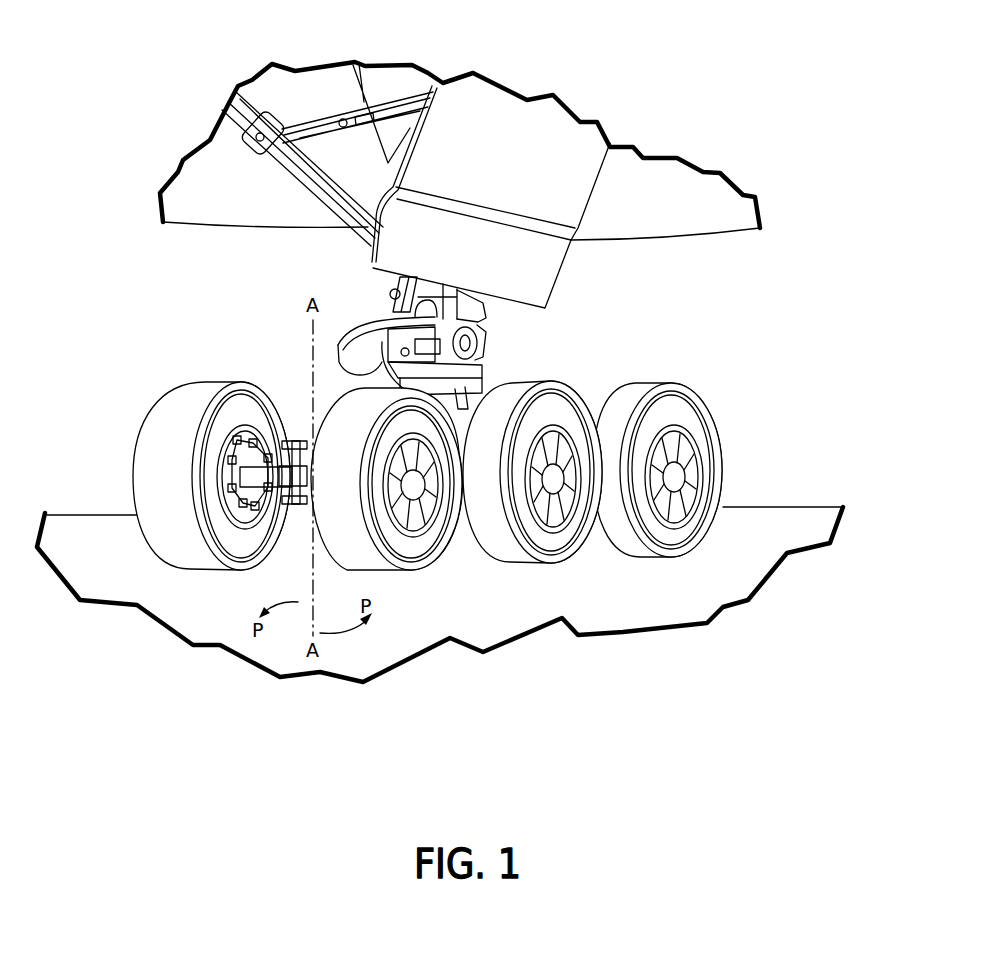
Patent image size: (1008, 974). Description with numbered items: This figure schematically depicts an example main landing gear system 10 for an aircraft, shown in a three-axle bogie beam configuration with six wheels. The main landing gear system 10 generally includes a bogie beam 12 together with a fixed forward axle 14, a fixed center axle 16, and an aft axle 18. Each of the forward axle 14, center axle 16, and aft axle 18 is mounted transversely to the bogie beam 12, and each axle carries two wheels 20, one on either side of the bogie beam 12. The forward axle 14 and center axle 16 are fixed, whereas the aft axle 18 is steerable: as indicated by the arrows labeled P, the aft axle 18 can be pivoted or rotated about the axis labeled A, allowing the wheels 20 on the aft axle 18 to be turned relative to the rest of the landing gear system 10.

The main landing gear system 10 is at (698, 346).
The bogie beam 12 is at (287, 406).
The fixed forward axle 14 is at (591, 565).
The fixed center axle 16 is at (458, 562).
The aft axle 18 is at (263, 497).
The wheels 20 is at (165, 412).